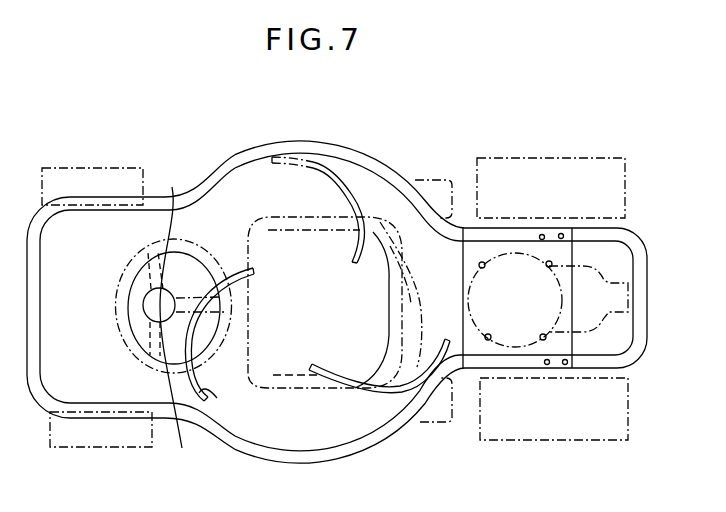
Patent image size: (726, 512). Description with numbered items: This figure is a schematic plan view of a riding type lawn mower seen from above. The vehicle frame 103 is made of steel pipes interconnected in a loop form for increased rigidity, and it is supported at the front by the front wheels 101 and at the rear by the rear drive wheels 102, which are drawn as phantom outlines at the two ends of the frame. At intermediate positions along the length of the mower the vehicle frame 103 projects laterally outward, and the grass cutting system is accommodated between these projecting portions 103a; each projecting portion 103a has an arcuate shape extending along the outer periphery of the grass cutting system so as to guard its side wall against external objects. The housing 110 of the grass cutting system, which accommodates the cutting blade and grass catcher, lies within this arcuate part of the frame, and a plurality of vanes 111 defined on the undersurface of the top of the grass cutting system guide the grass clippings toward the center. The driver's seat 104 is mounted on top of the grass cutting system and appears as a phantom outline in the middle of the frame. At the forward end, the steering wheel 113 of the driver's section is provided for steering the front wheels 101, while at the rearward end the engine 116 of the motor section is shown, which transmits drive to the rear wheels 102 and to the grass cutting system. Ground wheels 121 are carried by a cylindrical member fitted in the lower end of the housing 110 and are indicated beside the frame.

The front wheels 101 is at (53, 168).
The rear drive wheels 102 is at (560, 158).
The vehicle frame 103 is at (301, 141).
The projecting portions 103a is at (370, 450).
The driver's seat 104 is at (287, 390).
The housing 110 is at (172, 186).
The vanes 111 is at (352, 188).
The steering wheel 113 is at (180, 330).
The engine 116 is at (602, 277).
The ground wheels 121 is at (450, 180).